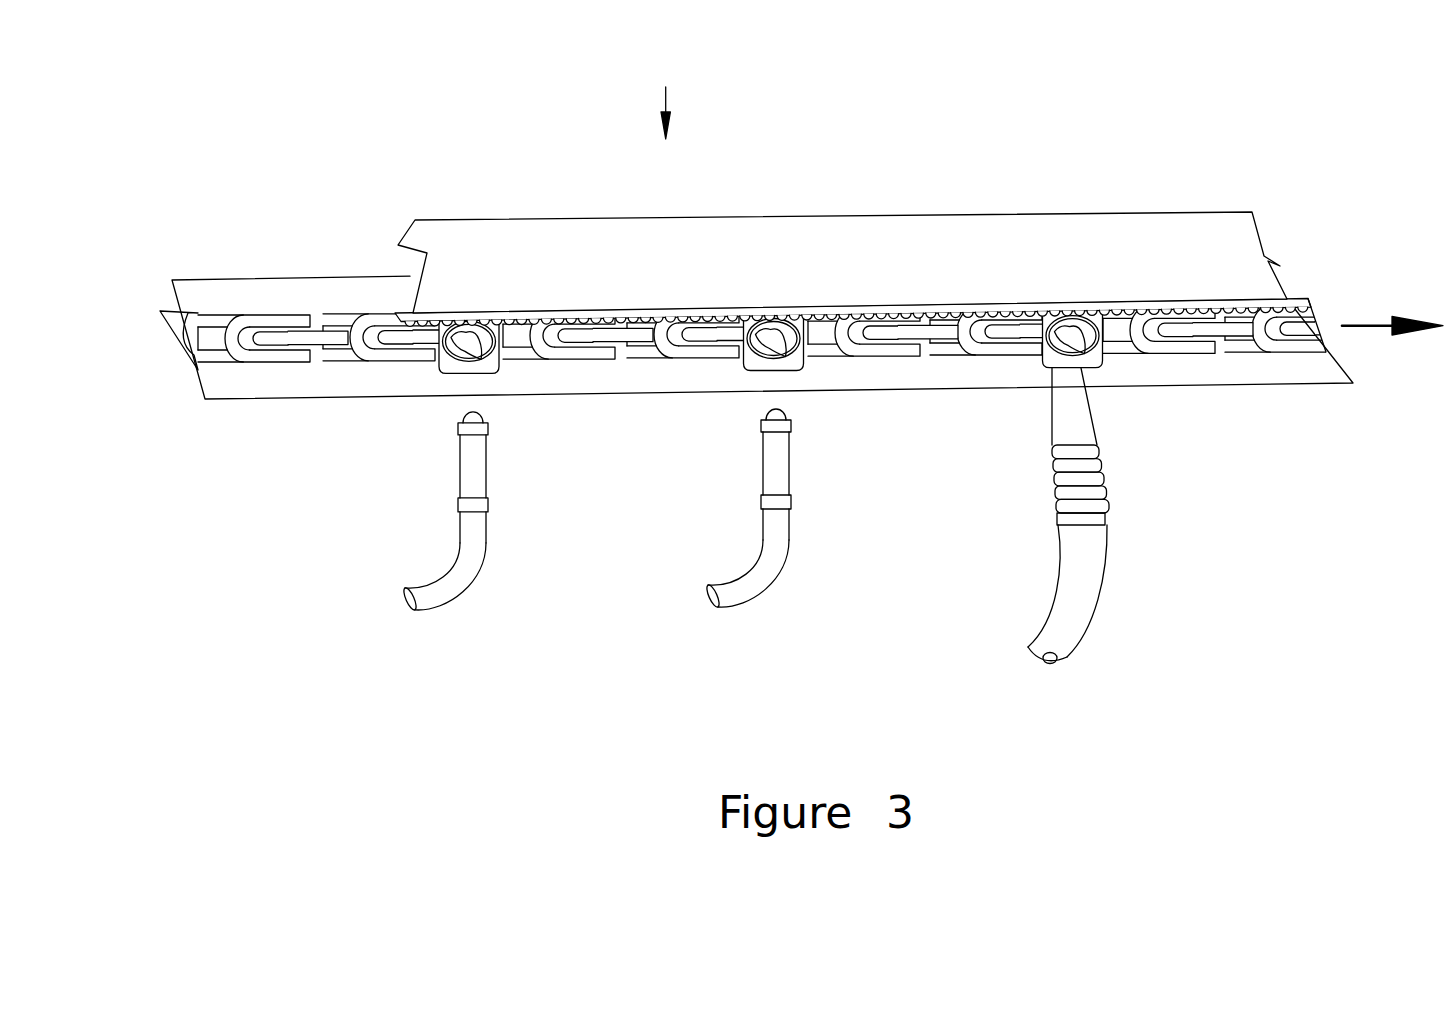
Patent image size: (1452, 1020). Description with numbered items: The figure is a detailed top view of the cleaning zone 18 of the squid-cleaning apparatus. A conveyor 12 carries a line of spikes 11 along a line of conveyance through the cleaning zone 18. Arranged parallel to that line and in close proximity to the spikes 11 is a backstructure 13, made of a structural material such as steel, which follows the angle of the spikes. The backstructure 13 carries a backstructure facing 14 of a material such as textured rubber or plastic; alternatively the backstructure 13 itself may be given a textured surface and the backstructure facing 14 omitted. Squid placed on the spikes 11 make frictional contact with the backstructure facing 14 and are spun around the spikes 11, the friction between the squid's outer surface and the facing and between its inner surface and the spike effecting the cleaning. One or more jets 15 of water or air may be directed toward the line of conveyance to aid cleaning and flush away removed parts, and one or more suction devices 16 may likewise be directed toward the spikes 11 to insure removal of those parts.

The spikes 11 is at (461, 354).
The conveyor 12 is at (284, 318).
The backstructure 13 is at (892, 243).
The backstructure facing 14 is at (977, 305).
The jets 15 is at (483, 462).
The suction devices 16 is at (1060, 423).
The cleaning zone 18 is at (665, 95).